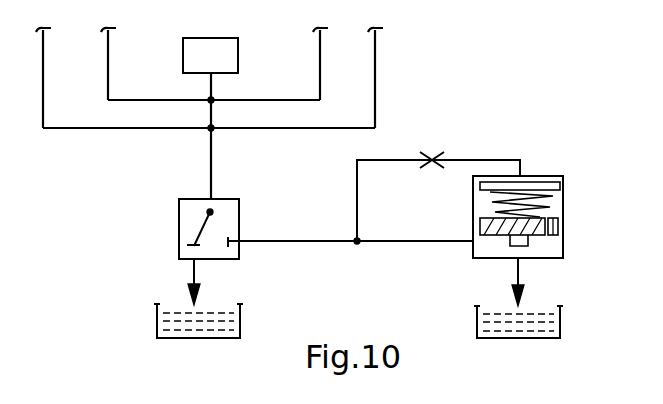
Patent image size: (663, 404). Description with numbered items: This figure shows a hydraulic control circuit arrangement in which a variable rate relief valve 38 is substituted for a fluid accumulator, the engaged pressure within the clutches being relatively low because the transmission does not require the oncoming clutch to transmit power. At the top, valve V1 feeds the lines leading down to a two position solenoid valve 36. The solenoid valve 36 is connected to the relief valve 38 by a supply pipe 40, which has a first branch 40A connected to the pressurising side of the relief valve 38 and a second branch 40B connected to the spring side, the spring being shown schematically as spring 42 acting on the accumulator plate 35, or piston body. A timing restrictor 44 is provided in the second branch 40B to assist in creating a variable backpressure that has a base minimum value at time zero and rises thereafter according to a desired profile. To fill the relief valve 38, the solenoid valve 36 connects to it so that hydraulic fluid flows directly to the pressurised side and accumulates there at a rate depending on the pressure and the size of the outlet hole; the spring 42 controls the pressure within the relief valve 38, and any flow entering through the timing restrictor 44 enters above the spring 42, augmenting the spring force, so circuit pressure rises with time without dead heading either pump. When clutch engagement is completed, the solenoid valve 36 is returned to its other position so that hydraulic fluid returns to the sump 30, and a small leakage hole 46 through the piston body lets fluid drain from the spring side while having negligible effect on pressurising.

The valve V1 is at (238, 52).
The sump 30 is at (157, 319).
The accumulator plate 35 is at (480, 225).
The solenoid valve 36 is at (178, 232).
The relief valve 38 is at (519, 186).
The supply pipe 40 is at (293, 238).
The first branch 40A is at (388, 247).
The second branch 40B is at (387, 160).
The spring 42 is at (490, 196).
The timing restrictor 44 is at (437, 153).
The leakage hole 46 is at (563, 228).